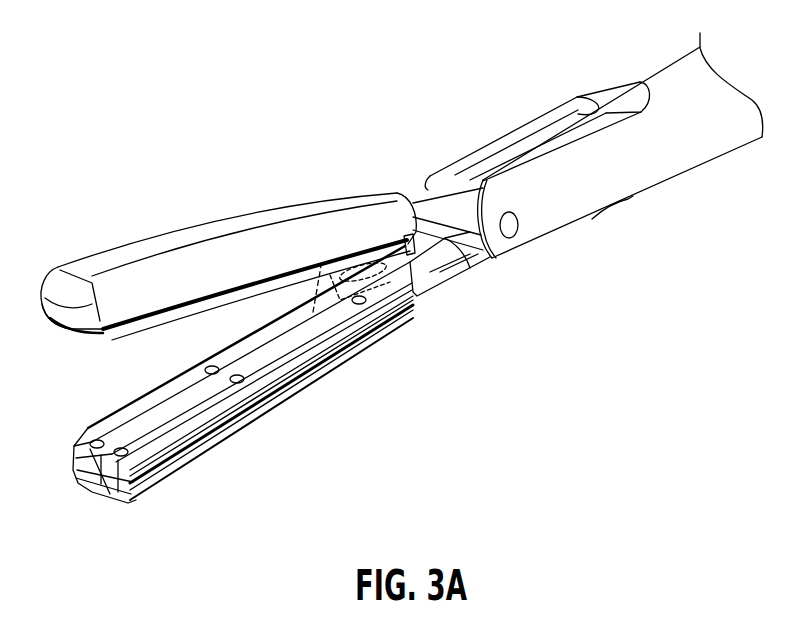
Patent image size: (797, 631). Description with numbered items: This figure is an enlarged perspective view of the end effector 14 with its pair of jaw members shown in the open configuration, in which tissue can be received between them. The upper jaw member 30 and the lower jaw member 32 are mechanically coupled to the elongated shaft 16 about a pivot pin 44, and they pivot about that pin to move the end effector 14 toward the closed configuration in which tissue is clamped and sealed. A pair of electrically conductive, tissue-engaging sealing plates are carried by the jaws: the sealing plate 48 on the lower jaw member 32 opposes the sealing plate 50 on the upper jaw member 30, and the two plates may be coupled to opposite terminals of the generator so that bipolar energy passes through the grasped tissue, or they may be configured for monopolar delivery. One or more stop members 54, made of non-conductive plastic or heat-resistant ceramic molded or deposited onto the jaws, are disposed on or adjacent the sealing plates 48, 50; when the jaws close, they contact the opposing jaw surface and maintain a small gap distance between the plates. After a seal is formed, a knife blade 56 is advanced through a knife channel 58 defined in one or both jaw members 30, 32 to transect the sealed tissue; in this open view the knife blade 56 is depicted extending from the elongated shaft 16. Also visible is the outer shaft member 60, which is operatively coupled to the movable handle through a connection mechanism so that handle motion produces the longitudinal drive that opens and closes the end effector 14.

The end effector 14 is at (190, 184).
The elongated shaft 16 is at (669, 50).
The upper jaw member 30 is at (135, 214).
The lower jaw member 32 is at (218, 480).
The pivot pin 44 is at (516, 226).
The sealing plate 48 is at (109, 437).
The sealing plate 50 is at (73, 333).
The stop members 54 is at (281, 407).
The knife blade 56 is at (365, 304).
The knife channel 58 is at (160, 403).
The outer shaft member 60 is at (641, 78).